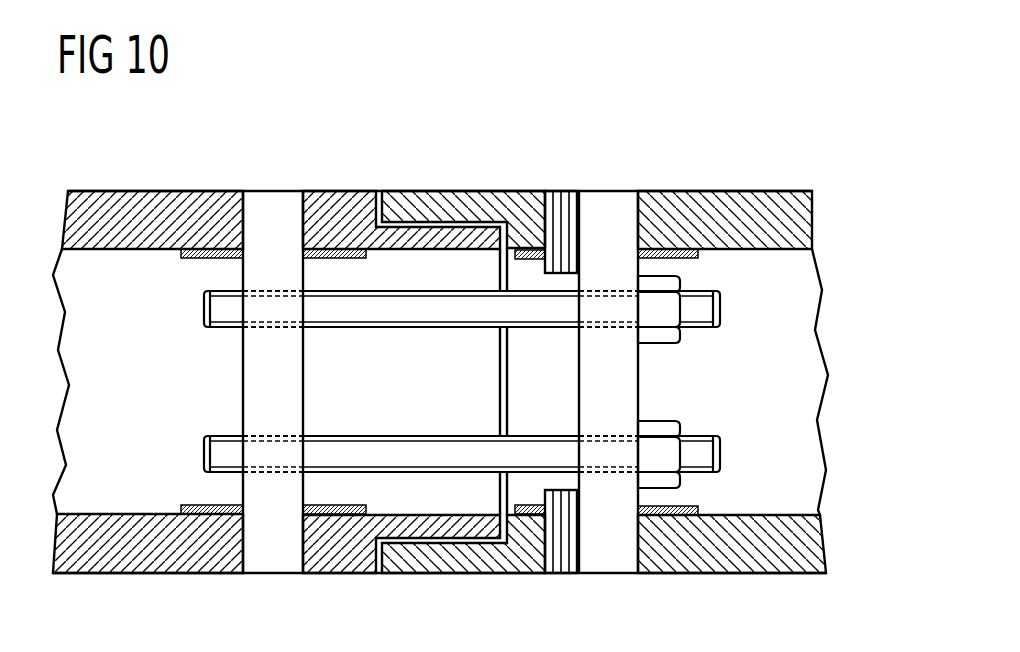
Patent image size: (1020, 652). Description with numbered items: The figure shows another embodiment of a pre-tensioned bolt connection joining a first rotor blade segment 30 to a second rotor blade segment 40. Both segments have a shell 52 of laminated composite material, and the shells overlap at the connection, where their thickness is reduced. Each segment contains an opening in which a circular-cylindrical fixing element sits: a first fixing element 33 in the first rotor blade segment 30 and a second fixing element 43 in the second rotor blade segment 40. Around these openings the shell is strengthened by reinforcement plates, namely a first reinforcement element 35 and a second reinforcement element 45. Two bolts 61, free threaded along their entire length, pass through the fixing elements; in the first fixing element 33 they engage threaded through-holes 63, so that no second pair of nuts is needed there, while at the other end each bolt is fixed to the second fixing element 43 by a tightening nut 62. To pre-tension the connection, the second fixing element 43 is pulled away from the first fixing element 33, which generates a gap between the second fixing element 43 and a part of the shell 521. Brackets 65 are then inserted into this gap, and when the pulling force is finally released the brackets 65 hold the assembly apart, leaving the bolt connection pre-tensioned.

The first rotor blade segment 30 is at (165, 201).
The first fixing element 33 is at (277, 202).
The first reinforcement element 35 is at (222, 248).
The second rotor blade segment 40 is at (742, 202).
The second fixing element 43 is at (605, 200).
The second reinforcement element 45 is at (661, 248).
The shell 52 is at (352, 202).
The part of the shell 521 is at (445, 202).
The bolt 61 is at (391, 315).
The tightening nut 62 is at (657, 333).
The threaded through-hole 63 is at (283, 313).
The bracket 65 is at (558, 202).